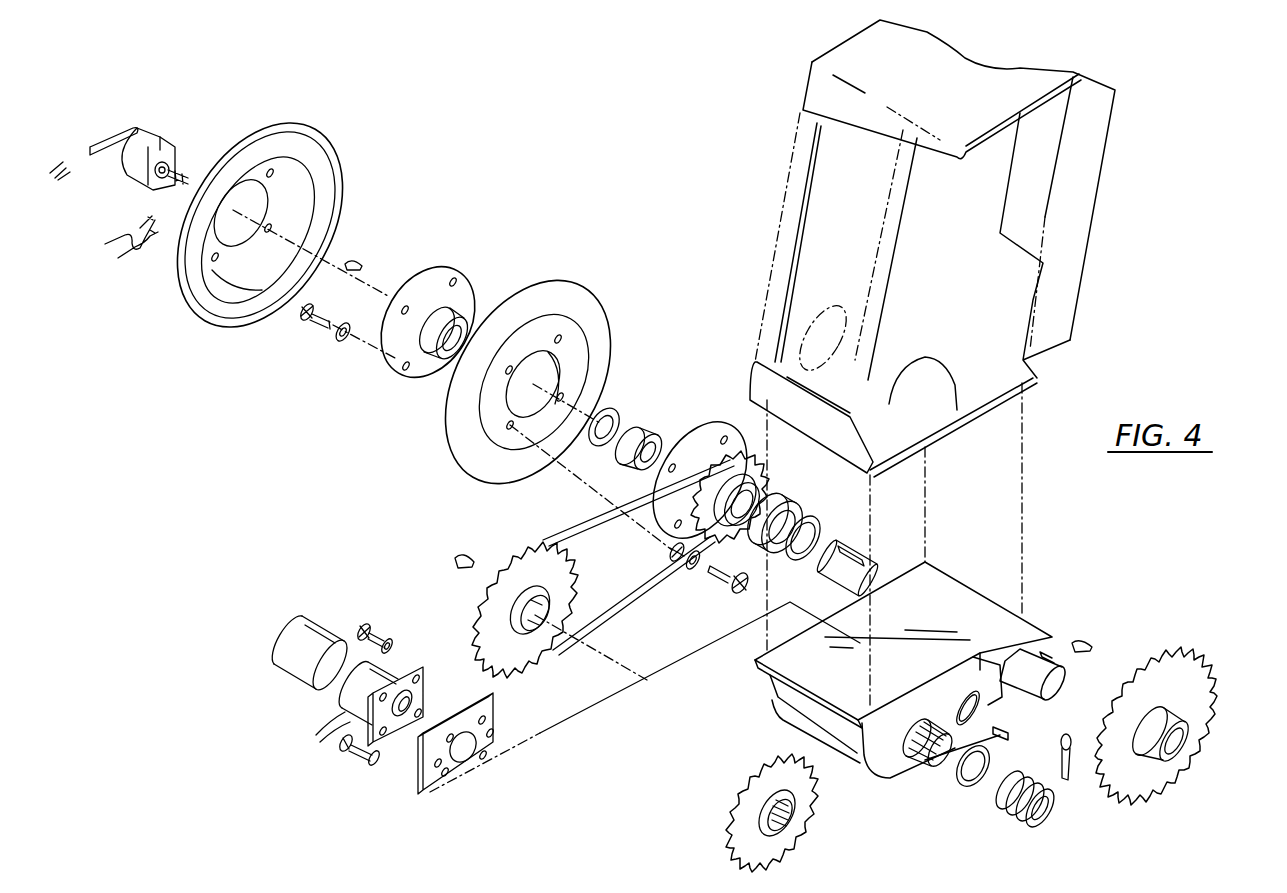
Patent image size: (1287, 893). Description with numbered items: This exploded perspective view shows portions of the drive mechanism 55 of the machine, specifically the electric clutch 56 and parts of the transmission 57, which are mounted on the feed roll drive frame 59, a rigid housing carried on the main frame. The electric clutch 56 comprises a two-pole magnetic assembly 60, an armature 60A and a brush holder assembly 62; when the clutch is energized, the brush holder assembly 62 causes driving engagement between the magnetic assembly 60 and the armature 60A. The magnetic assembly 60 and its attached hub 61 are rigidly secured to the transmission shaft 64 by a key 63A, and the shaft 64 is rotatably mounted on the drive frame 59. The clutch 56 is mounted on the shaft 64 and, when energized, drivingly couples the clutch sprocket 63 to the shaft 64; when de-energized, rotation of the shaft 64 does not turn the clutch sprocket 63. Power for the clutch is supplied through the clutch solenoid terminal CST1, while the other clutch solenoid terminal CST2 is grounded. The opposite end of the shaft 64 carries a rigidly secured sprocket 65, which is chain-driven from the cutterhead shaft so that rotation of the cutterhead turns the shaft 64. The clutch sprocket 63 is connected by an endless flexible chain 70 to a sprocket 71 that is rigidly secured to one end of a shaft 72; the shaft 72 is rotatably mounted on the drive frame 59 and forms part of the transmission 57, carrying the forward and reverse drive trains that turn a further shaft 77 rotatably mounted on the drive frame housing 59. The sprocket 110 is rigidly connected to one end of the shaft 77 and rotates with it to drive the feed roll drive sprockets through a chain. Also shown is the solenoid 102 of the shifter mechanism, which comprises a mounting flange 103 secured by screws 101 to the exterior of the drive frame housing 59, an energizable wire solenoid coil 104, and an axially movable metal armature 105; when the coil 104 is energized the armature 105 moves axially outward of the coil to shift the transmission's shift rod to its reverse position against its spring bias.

The drive mechanism 55 is at (437, 422).
The electric clutch 56 is at (358, 347).
The transmission 57 is at (1040, 588).
The feed roll drive frame 59 is at (888, 758).
The two-pole magnetic assembly 60 is at (341, 157).
The armature 60A is at (597, 317).
The hub 61 is at (448, 270).
The brush holder assembly 62 is at (168, 140).
The clutch sprocket 63 is at (755, 472).
The key 63A is at (360, 266).
The shaft 64 is at (878, 568).
The sprocket 65 is at (1183, 672).
The endless flexible chain 70 is at (633, 598).
The sprocket 71 is at (566, 568).
The shaft 72 is at (978, 710).
The shaft 77 is at (925, 754).
The screws 101 is at (378, 630).
The solenoid 102 is at (270, 664).
The mounting flange 103 is at (392, 727).
The solenoid coil 104 is at (350, 688).
The armature 105 is at (417, 700).
The sprocket 110 is at (775, 855).
The clutch solenoid terminal CST1 is at (58, 180).
The clutch solenoid terminal CST2 is at (60, 156).